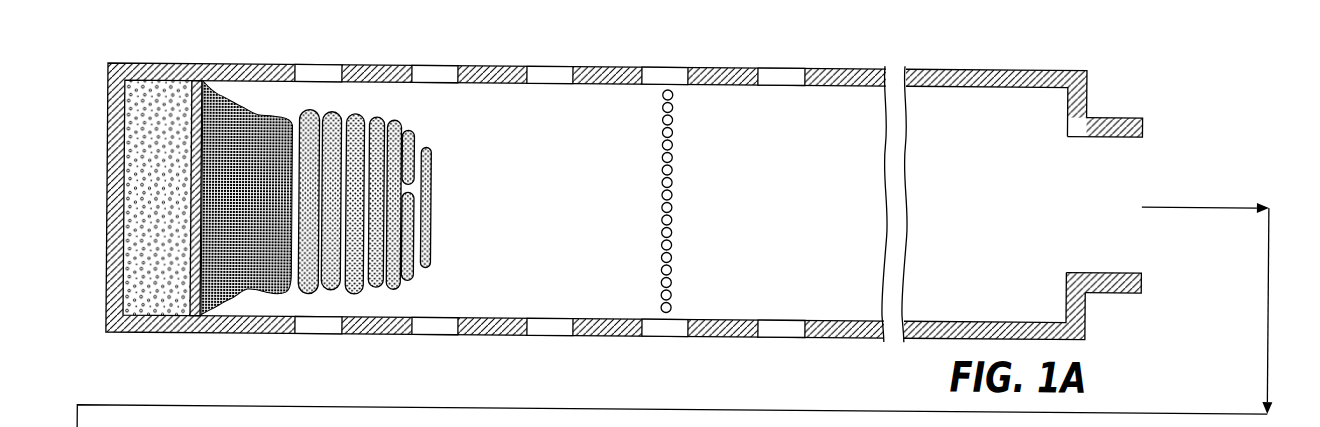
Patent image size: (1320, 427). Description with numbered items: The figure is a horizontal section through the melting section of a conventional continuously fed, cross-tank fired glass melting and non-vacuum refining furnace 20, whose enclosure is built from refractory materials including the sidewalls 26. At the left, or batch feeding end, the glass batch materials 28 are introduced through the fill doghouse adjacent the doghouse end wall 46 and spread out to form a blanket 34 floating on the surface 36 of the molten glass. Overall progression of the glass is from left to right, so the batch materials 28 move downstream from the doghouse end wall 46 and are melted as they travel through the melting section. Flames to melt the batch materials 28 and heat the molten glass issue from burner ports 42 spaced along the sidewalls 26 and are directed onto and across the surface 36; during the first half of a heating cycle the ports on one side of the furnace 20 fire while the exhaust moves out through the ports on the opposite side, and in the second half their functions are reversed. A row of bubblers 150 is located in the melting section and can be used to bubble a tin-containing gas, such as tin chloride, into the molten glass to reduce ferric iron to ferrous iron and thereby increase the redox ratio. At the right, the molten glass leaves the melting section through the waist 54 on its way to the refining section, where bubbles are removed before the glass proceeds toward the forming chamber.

The glass melting furnace 20 is at (602, 201).
The sidewalls 26 is at (610, 333).
The glass batch materials 28 is at (362, 111).
The blanket 34 is at (433, 200).
The surface of molten glass 36 is at (567, 224).
The burner ports 42 is at (318, 61).
The doghouse end wall 46 is at (108, 207).
The waist 54 is at (1108, 110).
The bubblers 150 is at (674, 166).